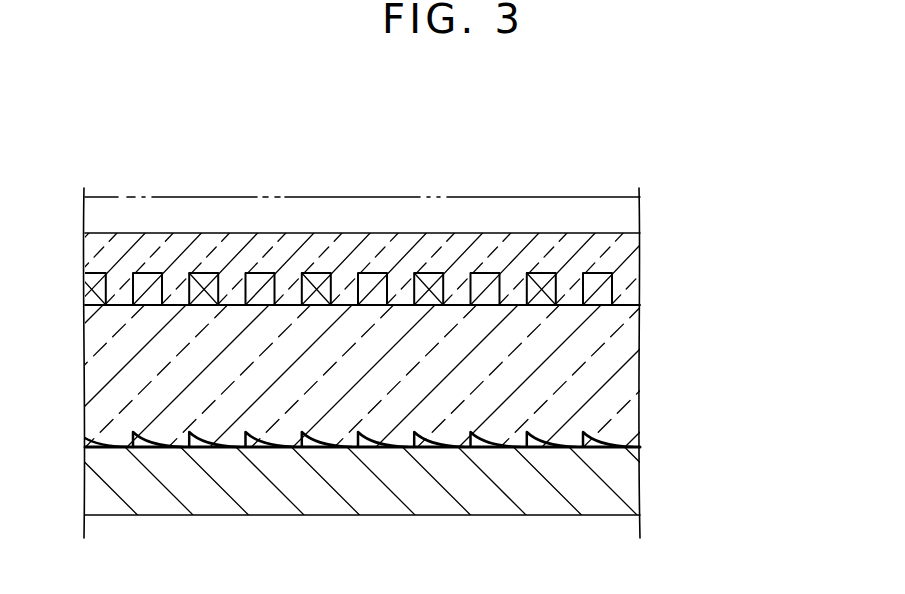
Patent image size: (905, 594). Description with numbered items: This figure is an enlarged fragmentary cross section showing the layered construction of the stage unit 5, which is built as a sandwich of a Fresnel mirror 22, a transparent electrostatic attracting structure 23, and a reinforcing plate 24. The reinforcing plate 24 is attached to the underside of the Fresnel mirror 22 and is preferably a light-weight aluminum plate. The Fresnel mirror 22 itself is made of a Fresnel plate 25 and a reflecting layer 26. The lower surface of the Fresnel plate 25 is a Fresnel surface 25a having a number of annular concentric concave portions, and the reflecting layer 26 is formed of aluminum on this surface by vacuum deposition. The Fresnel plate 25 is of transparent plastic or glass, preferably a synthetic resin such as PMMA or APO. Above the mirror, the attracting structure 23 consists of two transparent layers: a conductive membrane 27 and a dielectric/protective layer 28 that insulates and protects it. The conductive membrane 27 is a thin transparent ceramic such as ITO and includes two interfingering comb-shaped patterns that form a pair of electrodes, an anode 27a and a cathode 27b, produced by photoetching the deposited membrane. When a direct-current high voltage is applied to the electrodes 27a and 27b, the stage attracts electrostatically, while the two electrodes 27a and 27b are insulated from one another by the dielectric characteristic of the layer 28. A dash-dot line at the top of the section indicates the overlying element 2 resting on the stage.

The substrate 2 is at (493, 197).
The stage unit 5 is at (430, 334).
The Fresnel mirror 22 is at (406, 383).
The electrostatic attracting structure 23 is at (417, 234).
The reinforcing plate 24 is at (382, 481).
The Fresnel plate 25 is at (620, 363).
The Fresnel surface 25a is at (203, 443).
The reflecting layer 26 is at (384, 419).
The conductive membrane 27 is at (414, 234).
The anode 27a is at (262, 275).
The cathode 27b is at (318, 275).
The dielectric/protective layer 28 is at (623, 254).